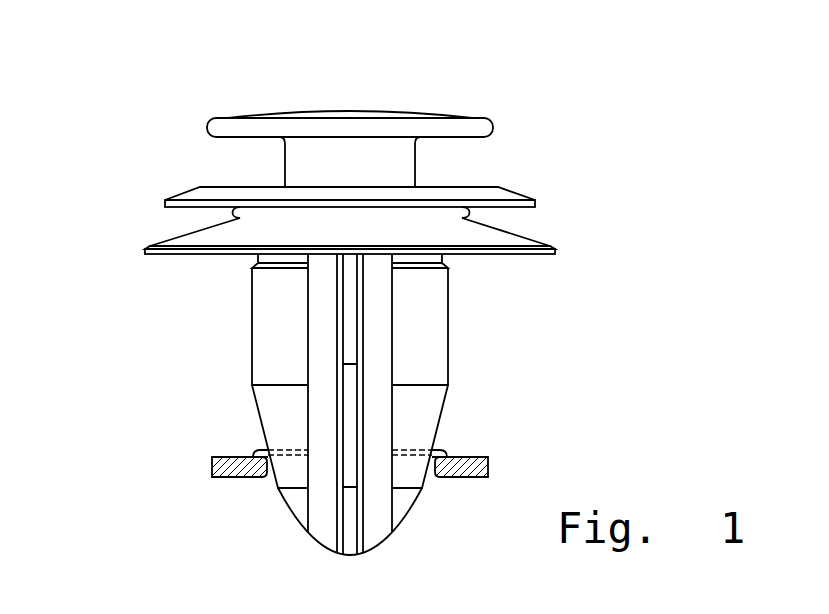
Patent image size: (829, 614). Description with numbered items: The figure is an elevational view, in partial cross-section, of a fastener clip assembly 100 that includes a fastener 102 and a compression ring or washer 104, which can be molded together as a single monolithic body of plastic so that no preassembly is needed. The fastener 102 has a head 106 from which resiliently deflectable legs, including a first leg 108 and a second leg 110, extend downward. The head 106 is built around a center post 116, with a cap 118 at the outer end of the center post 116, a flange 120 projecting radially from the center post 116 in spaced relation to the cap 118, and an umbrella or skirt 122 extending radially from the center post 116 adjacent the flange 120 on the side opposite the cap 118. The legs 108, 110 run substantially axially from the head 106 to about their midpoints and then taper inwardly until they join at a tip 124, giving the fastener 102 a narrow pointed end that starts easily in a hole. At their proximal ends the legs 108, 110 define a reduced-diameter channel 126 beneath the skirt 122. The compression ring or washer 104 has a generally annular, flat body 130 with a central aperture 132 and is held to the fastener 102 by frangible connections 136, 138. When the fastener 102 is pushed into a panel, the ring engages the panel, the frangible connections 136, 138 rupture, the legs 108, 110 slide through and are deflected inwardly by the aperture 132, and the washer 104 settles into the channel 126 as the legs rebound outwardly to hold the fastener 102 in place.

The fastener clip assembly 100 is at (153, 107).
The fastener 102 is at (348, 93).
The compression ring or washer 104 is at (485, 438).
The head 106 is at (543, 155).
The resiliently deflectable leg 108 is at (258, 310).
The resiliently deflectable leg 110 is at (440, 331).
The center post 116 is at (293, 160).
The cap 118 is at (228, 122).
The flange 120 is at (187, 197).
The umbrella or skirt 122 is at (167, 245).
The tip 124 is at (348, 557).
The channel 126 is at (448, 262).
The annular flat body 130 is at (490, 467).
The central aperture 132 is at (432, 473).
The frangible connection 136 is at (262, 453).
The frangible connection 138 is at (442, 448).